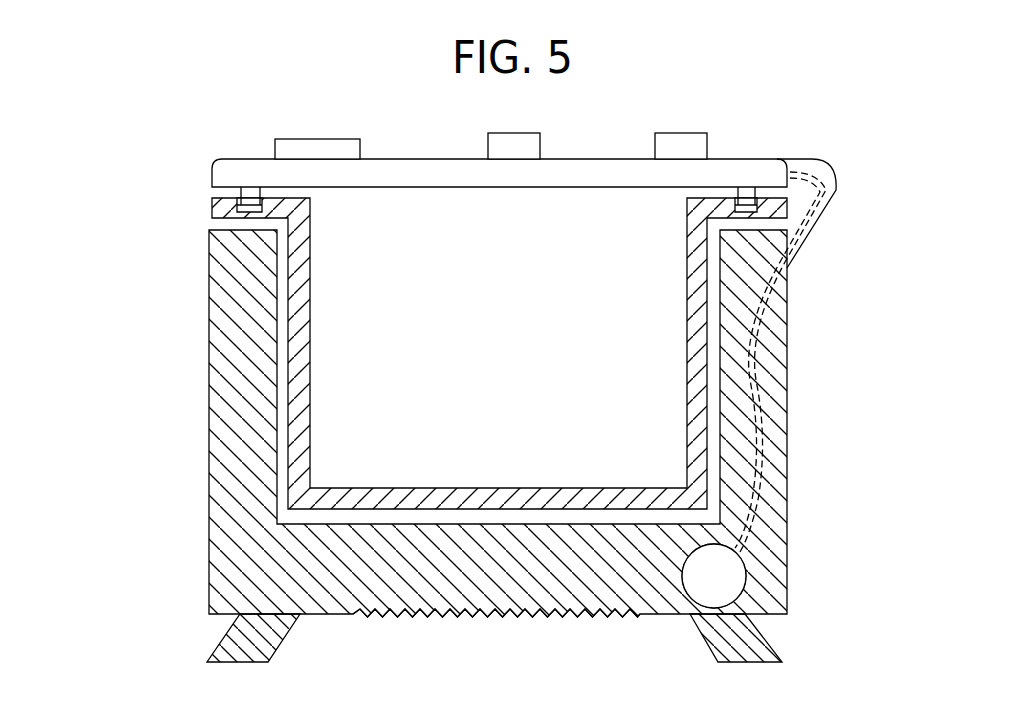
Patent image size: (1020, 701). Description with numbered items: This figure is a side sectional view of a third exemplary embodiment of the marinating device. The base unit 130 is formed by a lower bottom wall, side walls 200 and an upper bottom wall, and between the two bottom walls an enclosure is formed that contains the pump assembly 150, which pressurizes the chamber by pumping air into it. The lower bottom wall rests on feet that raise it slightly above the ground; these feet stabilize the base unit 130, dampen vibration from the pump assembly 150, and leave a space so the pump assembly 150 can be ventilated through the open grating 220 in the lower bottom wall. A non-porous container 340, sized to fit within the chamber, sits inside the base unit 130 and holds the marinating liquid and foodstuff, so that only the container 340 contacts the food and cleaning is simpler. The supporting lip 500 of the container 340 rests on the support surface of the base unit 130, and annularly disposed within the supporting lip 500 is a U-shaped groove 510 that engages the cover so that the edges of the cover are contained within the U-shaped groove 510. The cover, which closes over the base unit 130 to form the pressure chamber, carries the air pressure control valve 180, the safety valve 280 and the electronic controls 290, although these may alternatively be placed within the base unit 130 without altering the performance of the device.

The base unit 130 is at (773, 524).
The pump assembly 150 is at (746, 578).
The air pressure control valve 180 is at (700, 133).
The side walls 200 is at (787, 337).
The open grating 220 is at (440, 616).
The safety valve 280 is at (516, 133).
The electronic controls 290 is at (340, 139).
The non-porous container 340 is at (211, 209).
The supporting lip 500 is at (217, 192).
The U-shaped groove 510 is at (780, 208).